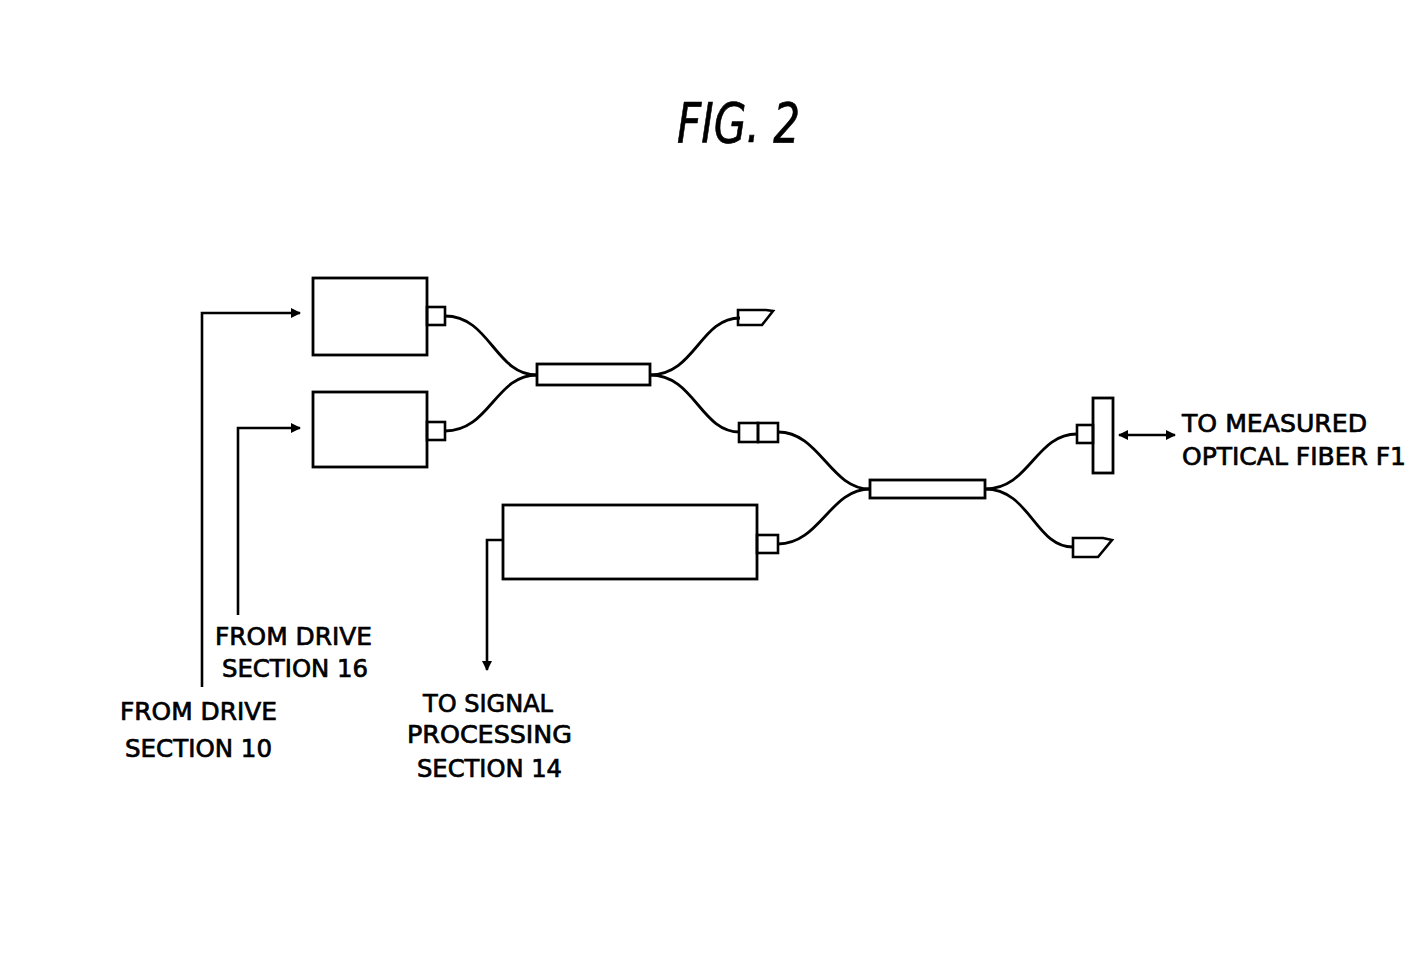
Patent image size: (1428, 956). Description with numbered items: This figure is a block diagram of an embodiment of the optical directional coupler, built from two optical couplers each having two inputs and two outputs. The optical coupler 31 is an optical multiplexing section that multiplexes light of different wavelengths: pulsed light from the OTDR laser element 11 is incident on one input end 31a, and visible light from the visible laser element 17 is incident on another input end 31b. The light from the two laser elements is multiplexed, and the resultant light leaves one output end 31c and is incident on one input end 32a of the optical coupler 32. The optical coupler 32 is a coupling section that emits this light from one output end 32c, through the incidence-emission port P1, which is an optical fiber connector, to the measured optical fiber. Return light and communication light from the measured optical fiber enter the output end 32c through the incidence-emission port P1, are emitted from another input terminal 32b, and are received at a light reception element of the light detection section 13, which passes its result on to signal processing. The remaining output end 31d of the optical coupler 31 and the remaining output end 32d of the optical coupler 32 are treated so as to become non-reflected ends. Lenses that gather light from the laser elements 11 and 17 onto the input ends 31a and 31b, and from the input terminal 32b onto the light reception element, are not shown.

The OTDR laser element 11 is at (342, 278).
The visible laser element 17 is at (340, 467).
The optical coupler 31 is at (598, 364).
The input end 31a is at (427, 310).
The input end 31b is at (427, 436).
The output end 31c is at (755, 442).
The output end 31d is at (773, 320).
The optical coupler 32 is at (922, 498).
The input end 32a is at (768, 423).
The input terminal 32b is at (757, 556).
The output end 32c is at (1090, 428).
The output end 32d is at (1112, 548).
The light detection section 13 is at (517, 580).
The incidence-emission port P1 is at (1107, 398).